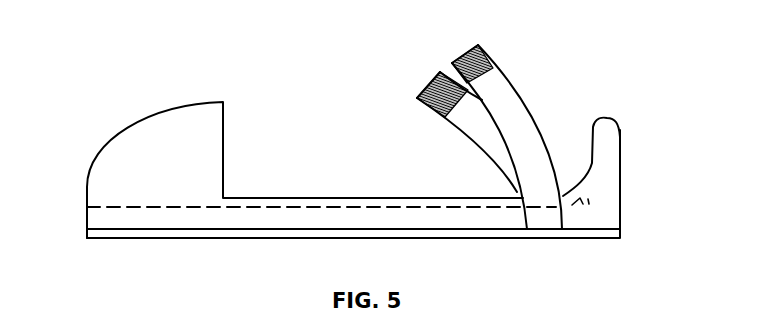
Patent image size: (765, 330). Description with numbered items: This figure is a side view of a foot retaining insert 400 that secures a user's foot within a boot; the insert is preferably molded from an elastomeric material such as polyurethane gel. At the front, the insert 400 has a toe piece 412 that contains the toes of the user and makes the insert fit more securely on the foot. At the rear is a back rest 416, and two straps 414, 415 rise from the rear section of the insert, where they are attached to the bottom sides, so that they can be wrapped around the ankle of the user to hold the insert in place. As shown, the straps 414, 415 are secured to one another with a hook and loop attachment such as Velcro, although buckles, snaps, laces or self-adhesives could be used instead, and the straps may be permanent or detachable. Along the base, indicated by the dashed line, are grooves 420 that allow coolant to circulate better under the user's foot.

The insert 400 is at (637, 65).
The toe piece 412 is at (120, 147).
The strap 414 is at (517, 105).
The strap 415 is at (462, 53).
The back rest 416 is at (612, 167).
The grooves 420 is at (330, 202).